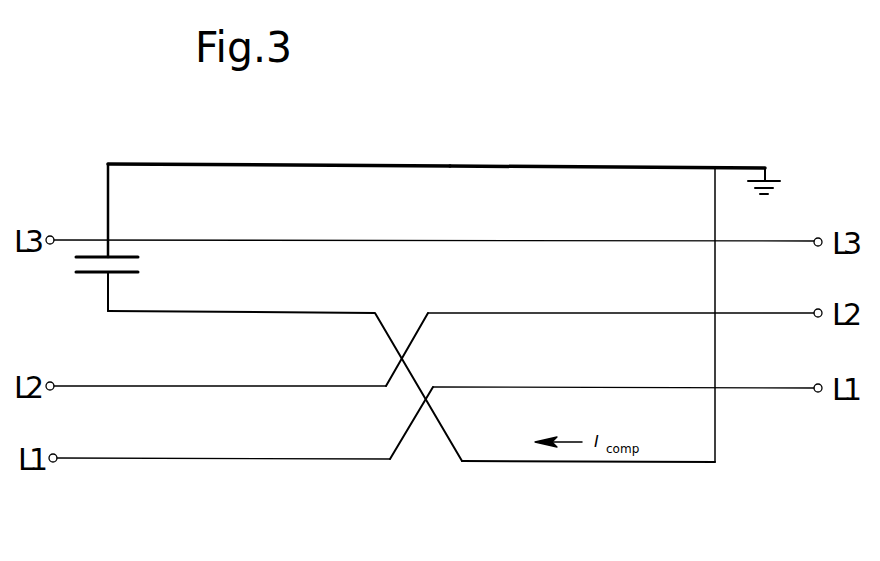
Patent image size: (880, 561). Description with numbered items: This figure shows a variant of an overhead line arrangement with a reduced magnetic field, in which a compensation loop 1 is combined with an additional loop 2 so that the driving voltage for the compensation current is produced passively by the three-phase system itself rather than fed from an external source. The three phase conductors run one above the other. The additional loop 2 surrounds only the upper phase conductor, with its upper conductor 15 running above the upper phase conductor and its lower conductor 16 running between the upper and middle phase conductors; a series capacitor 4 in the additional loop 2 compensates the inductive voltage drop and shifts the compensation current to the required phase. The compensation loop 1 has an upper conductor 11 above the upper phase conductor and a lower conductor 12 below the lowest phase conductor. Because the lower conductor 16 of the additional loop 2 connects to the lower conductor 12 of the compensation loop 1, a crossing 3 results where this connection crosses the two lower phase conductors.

The compensation loop 1 is at (632, 165).
The additional loop 2 is at (244, 162).
The crossing 3 is at (418, 452).
The series capacitor 4 is at (94, 275).
The upper conductor of the compensation loop 11 is at (706, 166).
The lower conductor of the compensation loop 12 is at (652, 465).
The upper conductor of the additional loop 15 is at (133, 162).
The lower conductor of the additional loop 16 is at (165, 314).